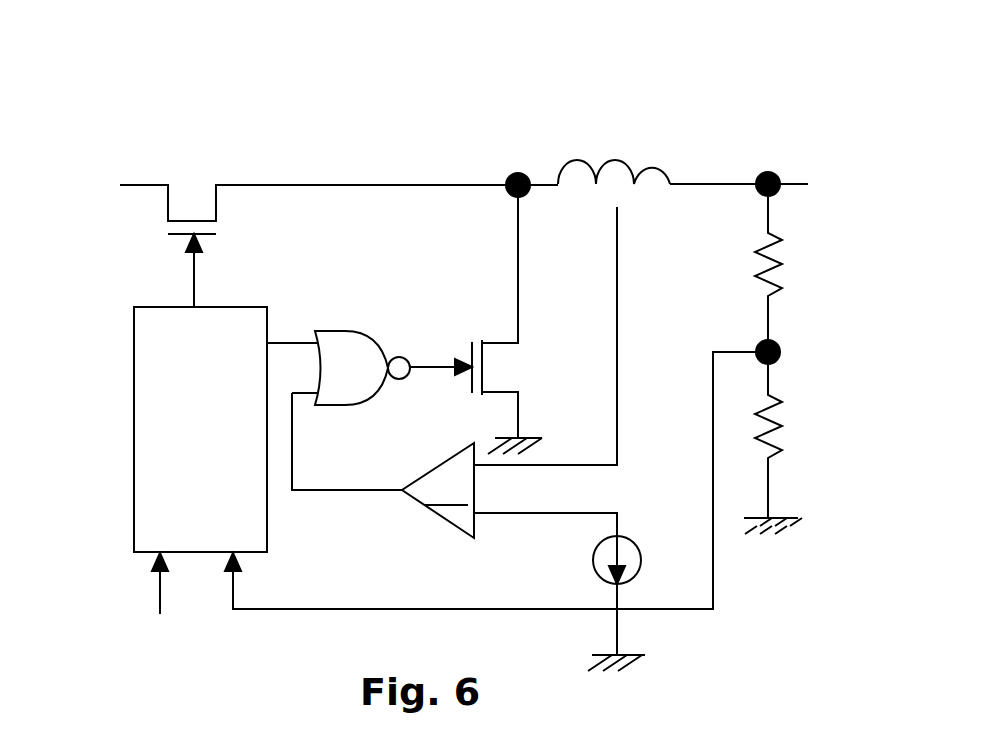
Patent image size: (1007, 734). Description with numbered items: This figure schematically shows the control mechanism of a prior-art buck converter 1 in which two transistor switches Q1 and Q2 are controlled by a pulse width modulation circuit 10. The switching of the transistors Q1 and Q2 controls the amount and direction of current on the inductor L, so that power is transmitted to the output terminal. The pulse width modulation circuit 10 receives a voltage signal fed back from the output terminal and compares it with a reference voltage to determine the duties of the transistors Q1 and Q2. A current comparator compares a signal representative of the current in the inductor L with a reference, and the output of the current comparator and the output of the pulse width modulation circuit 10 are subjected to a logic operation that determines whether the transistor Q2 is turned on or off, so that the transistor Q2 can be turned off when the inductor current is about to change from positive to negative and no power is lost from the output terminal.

The voltage regulator circuit 1 is at (716, 102).
The pulse width modulation circuit 10 is at (222, 470).
The transistor switch Q1 is at (313, 227).
The transistor switch Q2 is at (490, 325).
The inductor L is at (614, 145).